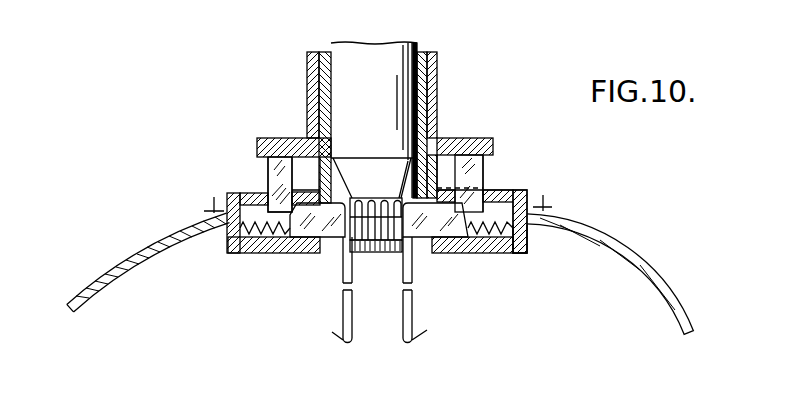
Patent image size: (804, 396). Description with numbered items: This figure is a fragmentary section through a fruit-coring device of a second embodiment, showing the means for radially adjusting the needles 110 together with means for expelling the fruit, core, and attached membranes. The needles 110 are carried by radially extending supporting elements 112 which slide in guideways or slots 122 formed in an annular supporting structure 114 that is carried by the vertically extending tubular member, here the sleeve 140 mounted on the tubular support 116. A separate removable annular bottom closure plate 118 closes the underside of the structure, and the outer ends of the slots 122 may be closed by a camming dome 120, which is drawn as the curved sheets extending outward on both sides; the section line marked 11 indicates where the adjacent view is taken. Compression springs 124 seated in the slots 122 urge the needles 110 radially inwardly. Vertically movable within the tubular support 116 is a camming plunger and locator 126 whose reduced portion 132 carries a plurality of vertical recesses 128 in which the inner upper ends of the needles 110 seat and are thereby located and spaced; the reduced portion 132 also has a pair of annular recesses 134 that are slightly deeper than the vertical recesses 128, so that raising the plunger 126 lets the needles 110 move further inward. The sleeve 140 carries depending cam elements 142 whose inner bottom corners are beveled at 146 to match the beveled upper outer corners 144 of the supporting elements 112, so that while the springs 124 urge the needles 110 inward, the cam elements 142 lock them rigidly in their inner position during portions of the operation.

The section line indicator 11 is at (384, 196).
The needles 110 is at (413, 302).
The supporting elements 112 is at (312, 225).
The annular supporting structure 114 is at (488, 192).
The tubular support 116 is at (427, 87).
The annular bottom closure plate 118 is at (493, 246).
The camming dome 120 is at (589, 236).
The slots 122 is at (524, 197).
The compression springs 124 is at (523, 235).
The camming plunger and locator 126 is at (393, 57).
The vertical recesses 128 is at (374, 255).
The reduced portion 132 is at (389, 253).
The annular recesses 134 is at (378, 202).
The sleeve 140 is at (445, 113).
The cam elements 142 is at (486, 170).
The bevel 144 is at (290, 196).
The bevel 146 is at (291, 194).